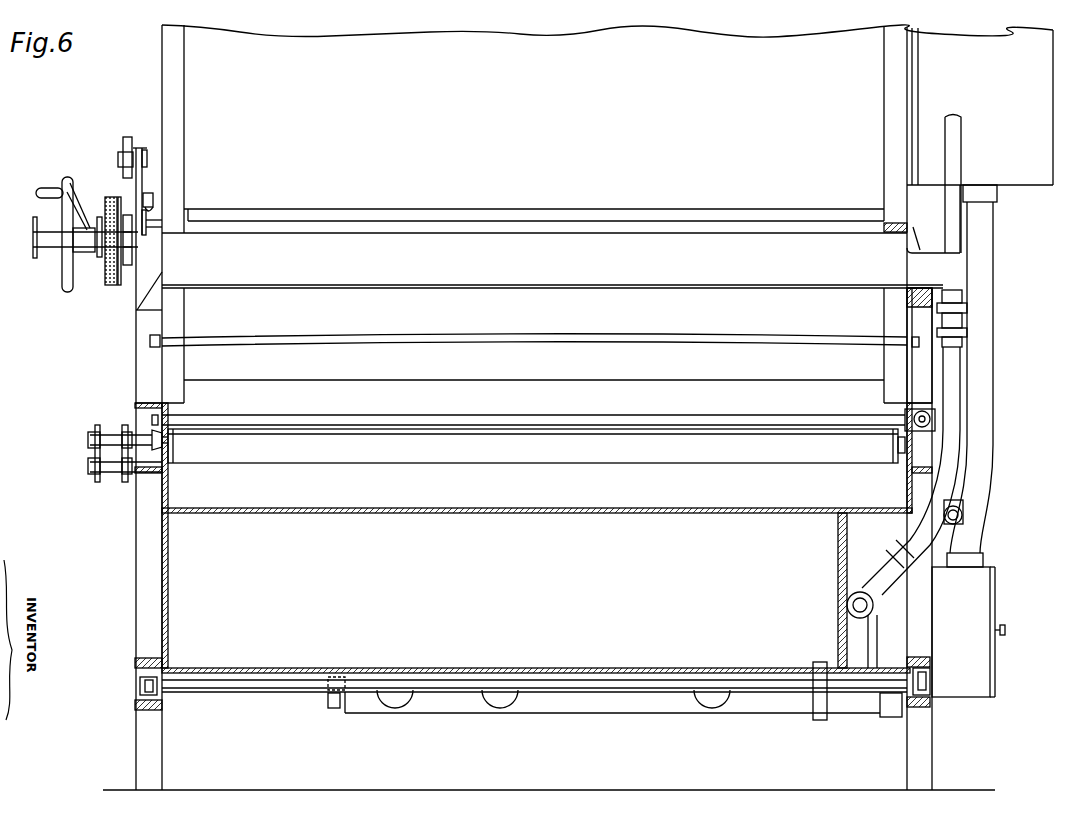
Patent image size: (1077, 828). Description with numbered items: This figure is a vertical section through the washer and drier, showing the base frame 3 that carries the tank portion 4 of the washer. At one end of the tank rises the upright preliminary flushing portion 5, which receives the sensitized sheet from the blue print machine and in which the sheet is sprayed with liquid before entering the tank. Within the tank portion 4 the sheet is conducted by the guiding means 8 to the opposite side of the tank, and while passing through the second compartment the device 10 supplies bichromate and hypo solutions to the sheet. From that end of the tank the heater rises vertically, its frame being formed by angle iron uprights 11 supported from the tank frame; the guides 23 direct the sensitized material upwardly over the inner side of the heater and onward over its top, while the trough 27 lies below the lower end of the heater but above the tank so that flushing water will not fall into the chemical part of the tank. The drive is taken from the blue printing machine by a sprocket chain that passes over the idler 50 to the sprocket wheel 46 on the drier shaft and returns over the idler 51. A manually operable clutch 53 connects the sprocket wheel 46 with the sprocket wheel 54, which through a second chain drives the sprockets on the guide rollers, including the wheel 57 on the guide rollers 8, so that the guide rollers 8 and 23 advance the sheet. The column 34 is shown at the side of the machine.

The base frame 3 is at (146, 567).
The tank portion 4 is at (190, 490).
The preliminary flushing portion 5 is at (139, 454).
The guiding means 8 is at (513, 457).
The device 10 is at (468, 418).
The angle iron uprights 11 is at (165, 113).
The guides 23 is at (580, 336).
The trough 27 is at (395, 278).
The column 34 is at (193, 80).
The sprocket wheel 46 is at (100, 267).
The idler 50 is at (97, 425).
The idler 51 is at (97, 484).
The manually operable clutch 53 is at (110, 197).
The sprocket wheel 54 is at (128, 267).
The wheel 57 is at (125, 425).